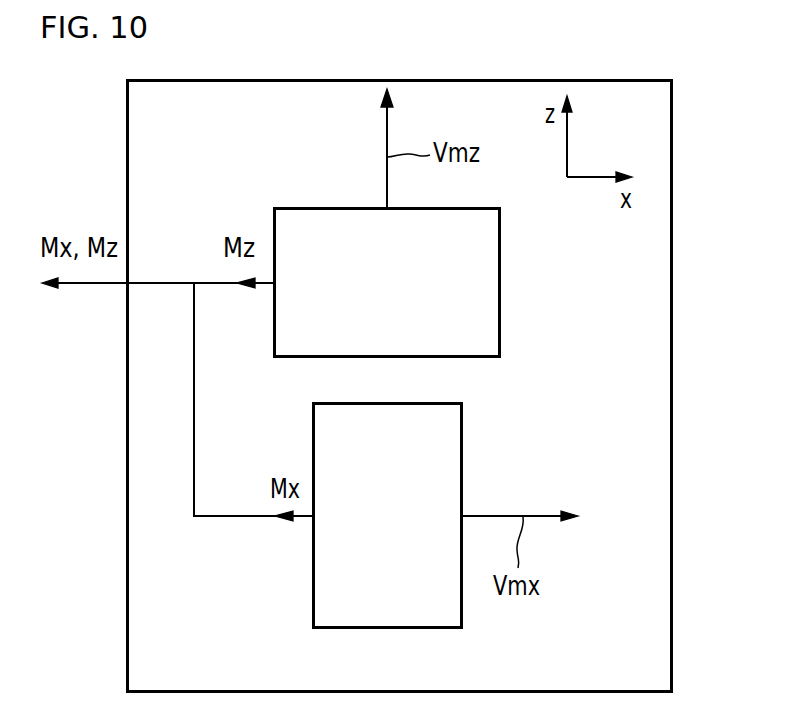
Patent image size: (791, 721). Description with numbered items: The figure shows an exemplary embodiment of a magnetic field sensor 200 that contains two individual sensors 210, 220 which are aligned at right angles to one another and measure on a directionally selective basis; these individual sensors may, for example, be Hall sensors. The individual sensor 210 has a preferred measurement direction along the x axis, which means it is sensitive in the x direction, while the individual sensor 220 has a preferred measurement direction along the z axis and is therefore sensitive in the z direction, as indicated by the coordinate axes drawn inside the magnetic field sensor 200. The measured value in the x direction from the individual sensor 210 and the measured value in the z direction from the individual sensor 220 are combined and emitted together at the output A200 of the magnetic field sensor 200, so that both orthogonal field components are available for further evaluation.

The magnetic field sensor 200 is at (672, 203).
The individual sensor 220 is at (500, 297).
The individual sensor 210 is at (462, 424).
The output A200 is at (124, 287).